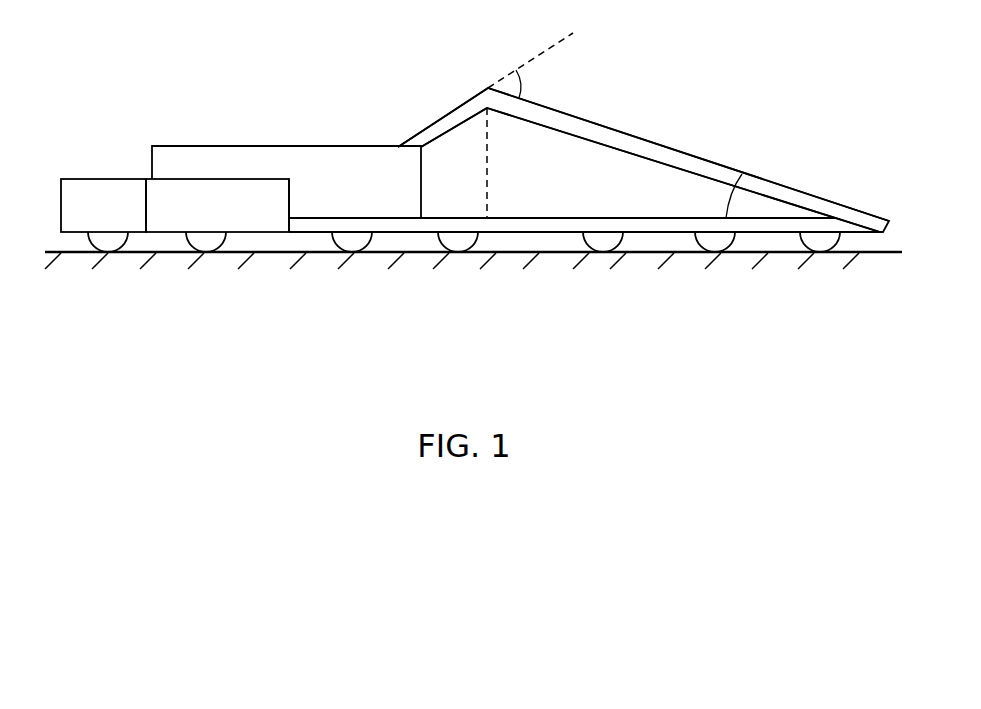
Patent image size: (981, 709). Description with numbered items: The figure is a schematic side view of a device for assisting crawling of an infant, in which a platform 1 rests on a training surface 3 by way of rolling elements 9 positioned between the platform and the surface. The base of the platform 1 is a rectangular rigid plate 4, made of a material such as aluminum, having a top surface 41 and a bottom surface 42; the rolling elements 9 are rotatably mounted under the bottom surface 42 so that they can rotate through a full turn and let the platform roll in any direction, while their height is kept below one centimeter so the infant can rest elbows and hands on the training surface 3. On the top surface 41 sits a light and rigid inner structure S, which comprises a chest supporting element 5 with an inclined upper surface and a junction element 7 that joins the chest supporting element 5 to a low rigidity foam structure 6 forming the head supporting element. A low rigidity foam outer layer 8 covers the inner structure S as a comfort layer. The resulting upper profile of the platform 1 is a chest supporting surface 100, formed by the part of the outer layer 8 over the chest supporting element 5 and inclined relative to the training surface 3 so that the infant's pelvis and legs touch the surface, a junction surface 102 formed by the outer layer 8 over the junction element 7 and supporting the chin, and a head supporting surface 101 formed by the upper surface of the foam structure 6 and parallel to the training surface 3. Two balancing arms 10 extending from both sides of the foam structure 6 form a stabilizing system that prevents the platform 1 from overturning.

The platform 1 is at (813, 152).
The training surface 3 is at (840, 262).
The rigid plate 4 is at (545, 225).
The top surface 41 is at (518, 220).
The bottom surface 42 is at (305, 233).
The chest supporting element 5 is at (612, 173).
The low rigidity foam structure 6 is at (372, 180).
The junction element 7 is at (437, 163).
The outer layer 8 is at (462, 110).
The rolling elements 9 is at (203, 242).
The balancing arms 10 is at (118, 200).
The chest supporting surface 100 is at (667, 146).
The head supporting surface 101 is at (293, 144).
The junction surface 102 is at (437, 120).
The inner structure S is at (568, 157).